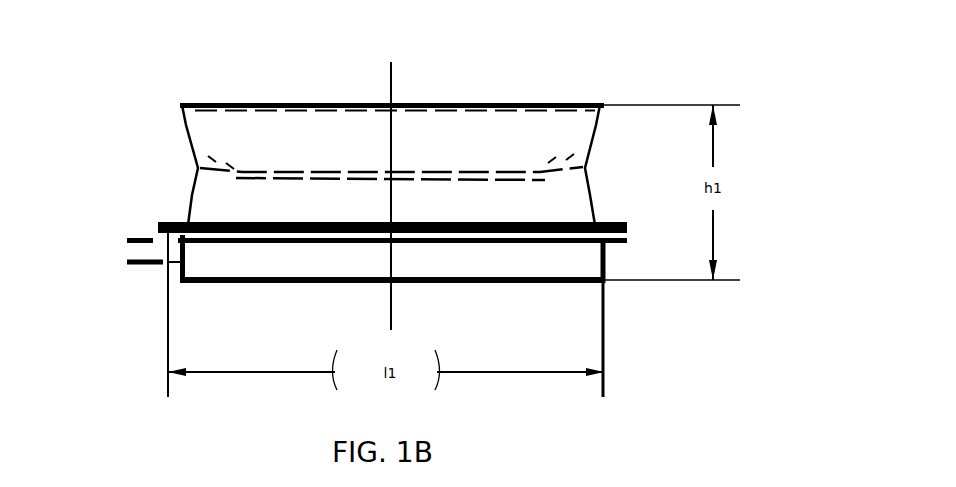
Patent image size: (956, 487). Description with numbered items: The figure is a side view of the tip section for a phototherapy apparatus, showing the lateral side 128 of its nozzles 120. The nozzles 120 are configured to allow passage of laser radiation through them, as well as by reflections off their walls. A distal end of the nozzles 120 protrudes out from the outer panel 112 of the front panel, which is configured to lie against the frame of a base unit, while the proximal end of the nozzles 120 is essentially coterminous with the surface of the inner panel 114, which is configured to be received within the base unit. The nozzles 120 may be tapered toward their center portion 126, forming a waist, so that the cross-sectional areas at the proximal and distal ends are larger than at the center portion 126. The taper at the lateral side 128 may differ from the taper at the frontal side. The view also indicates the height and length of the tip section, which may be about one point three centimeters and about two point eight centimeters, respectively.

The nozzles 120 is at (184, 76).
The lateral side 128 is at (212, 133).
The center portion 126 is at (200, 169).
The outer panel 112 is at (162, 230).
The inner panel 114 is at (167, 263).